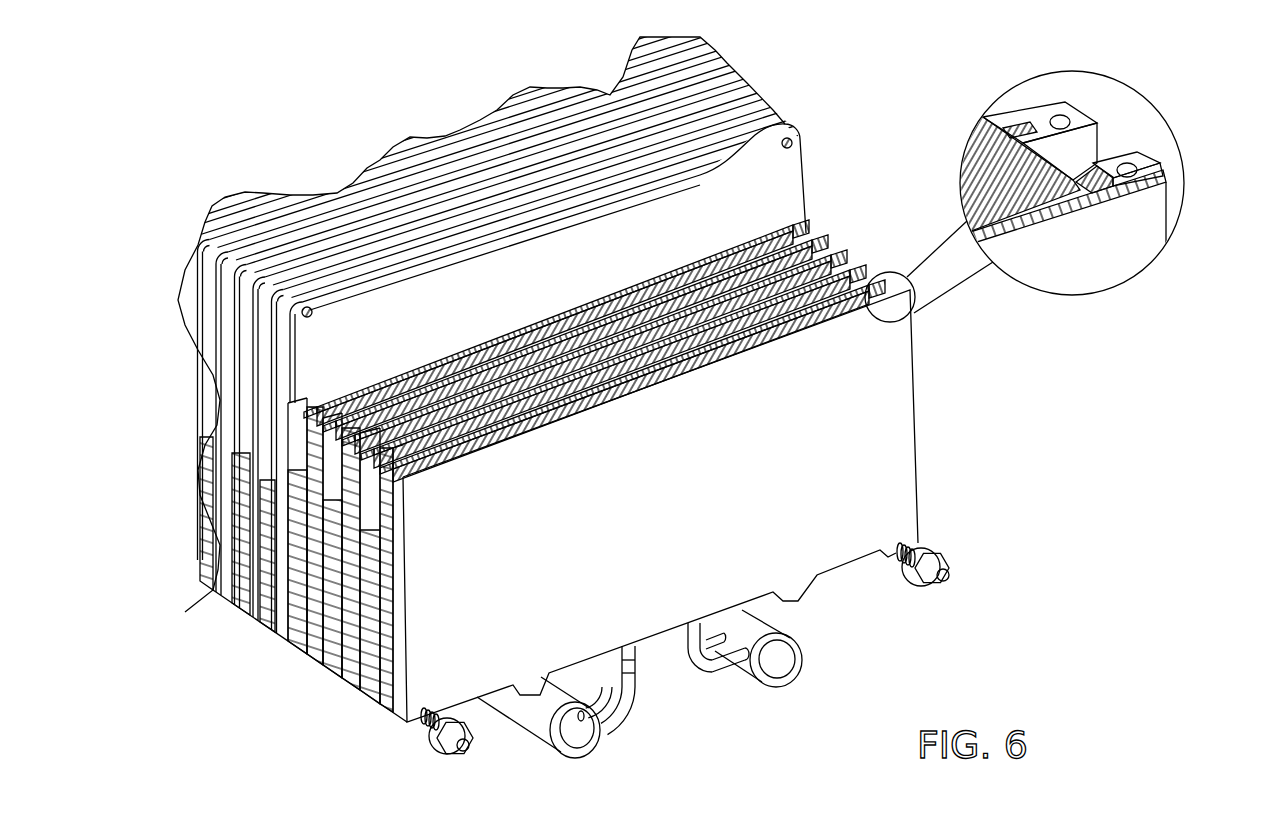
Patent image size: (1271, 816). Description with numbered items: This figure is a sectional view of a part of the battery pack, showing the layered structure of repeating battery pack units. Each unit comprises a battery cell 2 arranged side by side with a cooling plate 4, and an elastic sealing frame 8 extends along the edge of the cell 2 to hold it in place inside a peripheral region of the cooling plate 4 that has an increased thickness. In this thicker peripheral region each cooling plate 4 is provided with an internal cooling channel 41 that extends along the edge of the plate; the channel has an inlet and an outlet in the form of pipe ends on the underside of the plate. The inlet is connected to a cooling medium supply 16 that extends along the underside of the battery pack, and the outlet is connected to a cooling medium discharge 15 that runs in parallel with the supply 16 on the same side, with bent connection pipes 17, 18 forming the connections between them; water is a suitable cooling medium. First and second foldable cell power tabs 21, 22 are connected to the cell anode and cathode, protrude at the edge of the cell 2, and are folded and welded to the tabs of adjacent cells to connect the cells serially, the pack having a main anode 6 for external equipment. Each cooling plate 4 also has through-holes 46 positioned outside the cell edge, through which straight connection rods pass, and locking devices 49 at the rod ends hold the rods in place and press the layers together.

The battery cell 2 is at (980, 197).
The cooling plate 4 is at (873, 433).
The main anode 6 is at (387, 627).
The elastic sealing frame 8 is at (1080, 163).
The cooling medium discharge 15 is at (577, 738).
The cooling medium supply 16 is at (777, 662).
The connection pipe 17 is at (627, 693).
The connection pipe 18 is at (723, 667).
The first foldable cell power tab 21 is at (315, 580).
The second foldable cell power tab 22 is at (224, 350).
The internal cooling channel 41 is at (1073, 107).
The through-hole 46 is at (805, 137).
The locking device 49 is at (945, 580).